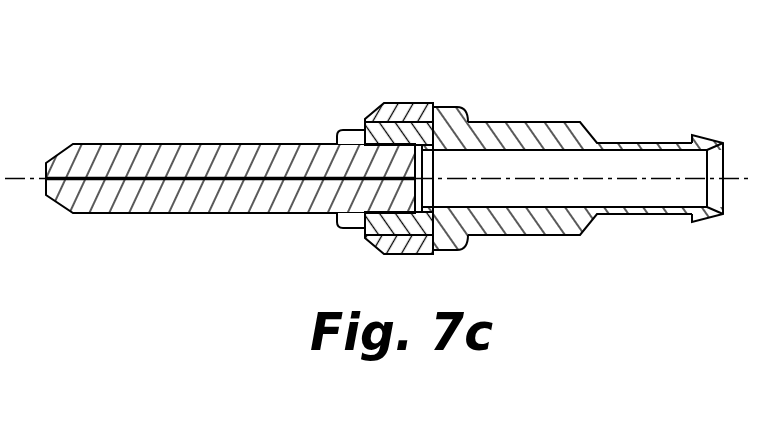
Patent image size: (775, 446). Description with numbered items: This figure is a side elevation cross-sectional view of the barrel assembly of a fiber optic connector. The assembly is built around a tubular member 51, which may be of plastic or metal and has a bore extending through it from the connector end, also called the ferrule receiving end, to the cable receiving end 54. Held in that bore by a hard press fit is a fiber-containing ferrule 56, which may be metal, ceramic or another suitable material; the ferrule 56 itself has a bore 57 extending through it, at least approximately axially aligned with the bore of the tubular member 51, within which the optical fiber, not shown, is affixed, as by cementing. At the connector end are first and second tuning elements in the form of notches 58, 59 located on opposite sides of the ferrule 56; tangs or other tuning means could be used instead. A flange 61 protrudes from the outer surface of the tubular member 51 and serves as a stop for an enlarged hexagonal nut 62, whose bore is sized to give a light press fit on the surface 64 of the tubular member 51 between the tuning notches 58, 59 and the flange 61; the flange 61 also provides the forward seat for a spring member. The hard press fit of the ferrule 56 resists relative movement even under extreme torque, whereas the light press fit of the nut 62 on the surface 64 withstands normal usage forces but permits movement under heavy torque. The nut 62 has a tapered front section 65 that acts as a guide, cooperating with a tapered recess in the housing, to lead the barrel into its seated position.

The tubular member 51 is at (545, 122).
The cable receiving end 54 is at (708, 138).
The ferrule 56 is at (192, 143).
The bore 57 is at (193, 181).
The notch 58 is at (345, 135).
The notch 59 is at (343, 225).
The flange 61 is at (445, 106).
The hexagonal nut 62 is at (415, 102).
The surface 64 is at (377, 248).
The tapered front section 65 is at (377, 107).